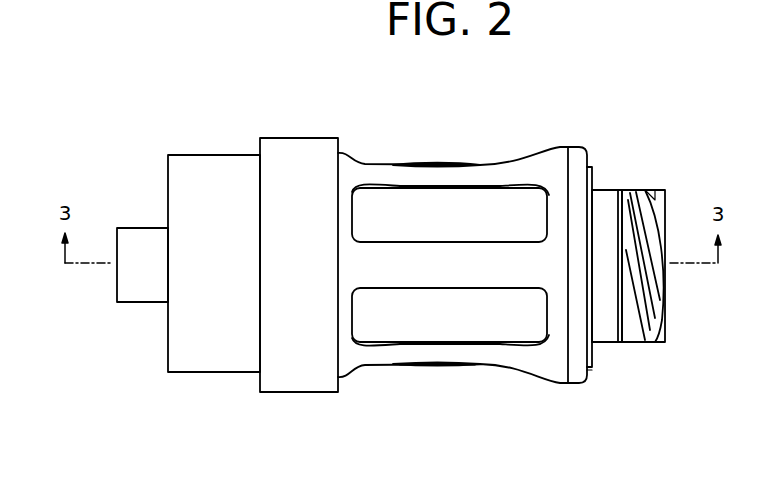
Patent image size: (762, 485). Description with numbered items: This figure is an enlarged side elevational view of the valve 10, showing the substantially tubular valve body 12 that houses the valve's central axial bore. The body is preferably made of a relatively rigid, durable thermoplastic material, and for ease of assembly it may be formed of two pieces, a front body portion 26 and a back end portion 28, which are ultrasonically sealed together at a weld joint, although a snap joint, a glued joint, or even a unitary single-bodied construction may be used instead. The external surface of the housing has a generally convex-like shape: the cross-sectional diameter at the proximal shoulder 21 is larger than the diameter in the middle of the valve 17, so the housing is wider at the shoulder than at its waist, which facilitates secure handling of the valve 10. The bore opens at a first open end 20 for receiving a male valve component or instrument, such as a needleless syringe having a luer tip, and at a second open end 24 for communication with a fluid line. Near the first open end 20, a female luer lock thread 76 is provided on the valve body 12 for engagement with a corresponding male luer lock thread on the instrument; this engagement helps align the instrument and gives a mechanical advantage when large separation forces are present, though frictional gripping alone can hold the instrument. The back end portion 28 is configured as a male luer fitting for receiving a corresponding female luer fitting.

The valve 10 is at (358, 379).
The valve body 12 is at (378, 156).
The middle of the valve 17 is at (438, 367).
The first open end 20 is at (665, 314).
The shoulder 21 is at (586, 378).
The second open end 24 is at (117, 293).
The front body portion 26 is at (528, 160).
The back end portion 28 is at (203, 155).
The luer lock thread 76 is at (662, 190).